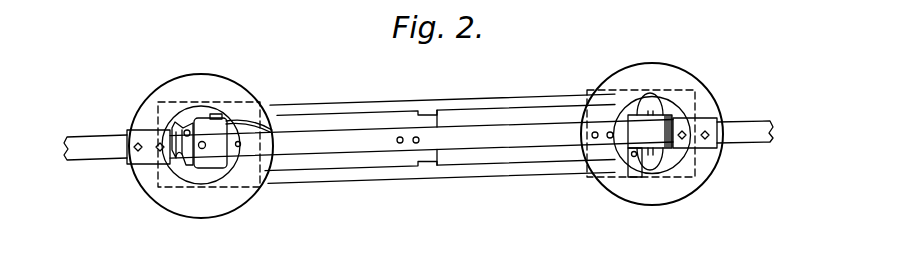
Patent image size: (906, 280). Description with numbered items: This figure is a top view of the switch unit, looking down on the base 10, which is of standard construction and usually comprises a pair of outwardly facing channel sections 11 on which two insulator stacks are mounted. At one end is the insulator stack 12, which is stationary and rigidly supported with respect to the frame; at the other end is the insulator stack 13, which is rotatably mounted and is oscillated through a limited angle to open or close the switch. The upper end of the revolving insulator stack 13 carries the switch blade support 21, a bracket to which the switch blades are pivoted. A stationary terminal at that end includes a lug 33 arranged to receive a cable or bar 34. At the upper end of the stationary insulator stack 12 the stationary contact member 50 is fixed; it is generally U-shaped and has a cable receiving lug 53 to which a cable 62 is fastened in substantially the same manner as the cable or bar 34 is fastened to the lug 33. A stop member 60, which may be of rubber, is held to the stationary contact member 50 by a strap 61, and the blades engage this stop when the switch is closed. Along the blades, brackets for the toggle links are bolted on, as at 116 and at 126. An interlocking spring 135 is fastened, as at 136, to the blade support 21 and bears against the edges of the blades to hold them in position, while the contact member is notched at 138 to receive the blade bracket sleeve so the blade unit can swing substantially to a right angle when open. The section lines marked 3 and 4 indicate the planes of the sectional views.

The section line 3- 3 is at (200, 92).
The section line 4- 4 is at (641, 45).
The base 10 is at (447, 186).
The channel sections 11 is at (471, 101).
The insulator stack 12 is at (726, 82).
The insulator stack 13 is at (153, 216).
The switch blade support 21 is at (229, 184).
The lug 33 is at (140, 164).
The cable or bar 34 is at (93, 141).
The stationary contact member 50 is at (665, 105).
The cable receiving lug 53 is at (718, 152).
The stop member 60 is at (622, 163).
The strap 61 is at (645, 176).
The cable 62 is at (750, 128).
The bolts 116 is at (414, 143).
The bolts 126 is at (609, 132).
The interlocking spring 135 is at (252, 125).
The fastening 136 is at (214, 115).
The notch 138 is at (173, 133).